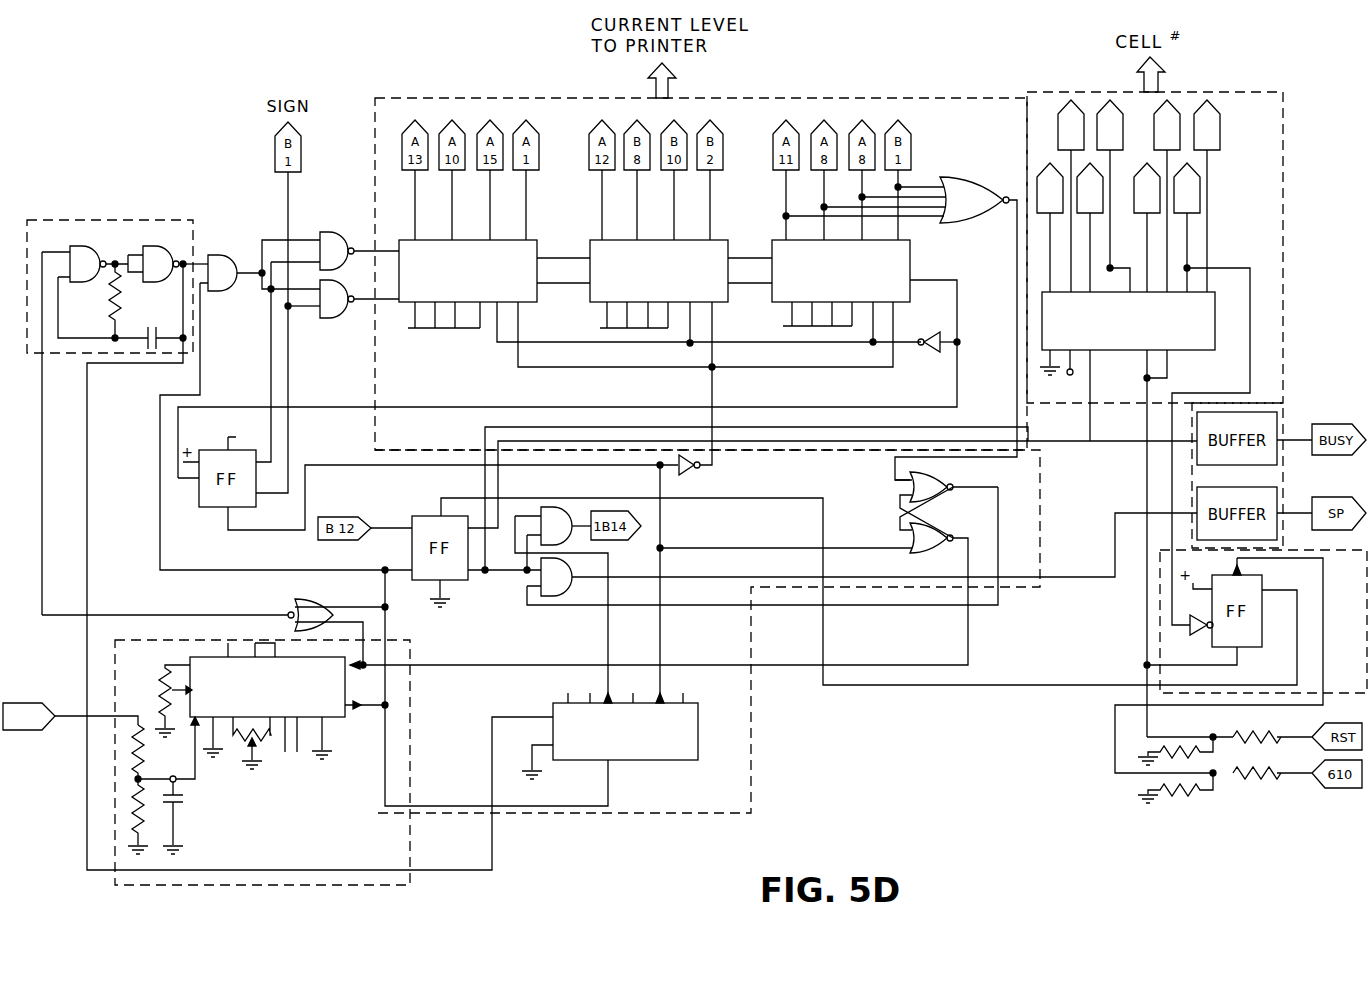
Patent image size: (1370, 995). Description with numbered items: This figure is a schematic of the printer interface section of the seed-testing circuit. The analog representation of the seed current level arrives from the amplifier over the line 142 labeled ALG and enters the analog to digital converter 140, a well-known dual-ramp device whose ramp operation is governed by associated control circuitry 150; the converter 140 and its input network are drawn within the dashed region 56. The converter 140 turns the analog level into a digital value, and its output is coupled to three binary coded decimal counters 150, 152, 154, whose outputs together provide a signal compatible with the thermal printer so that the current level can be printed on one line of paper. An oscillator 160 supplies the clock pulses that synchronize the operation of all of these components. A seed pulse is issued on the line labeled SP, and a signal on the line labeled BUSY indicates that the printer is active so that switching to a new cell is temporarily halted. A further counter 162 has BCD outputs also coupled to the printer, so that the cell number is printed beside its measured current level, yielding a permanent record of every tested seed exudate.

The oscillator 160 is at (181, 222).
The binary coded decimal counter 150 is at (523, 260).
The binary coded decimal counter 152 is at (712, 253).
The binary coded decimal counter 154 is at (895, 258).
The counter 162 is at (1177, 332).
The line 142 is at (73, 714).
The analog to digital converter 140 is at (330, 707).
The analog-to-digital conversion circuit 56 is at (360, 877).